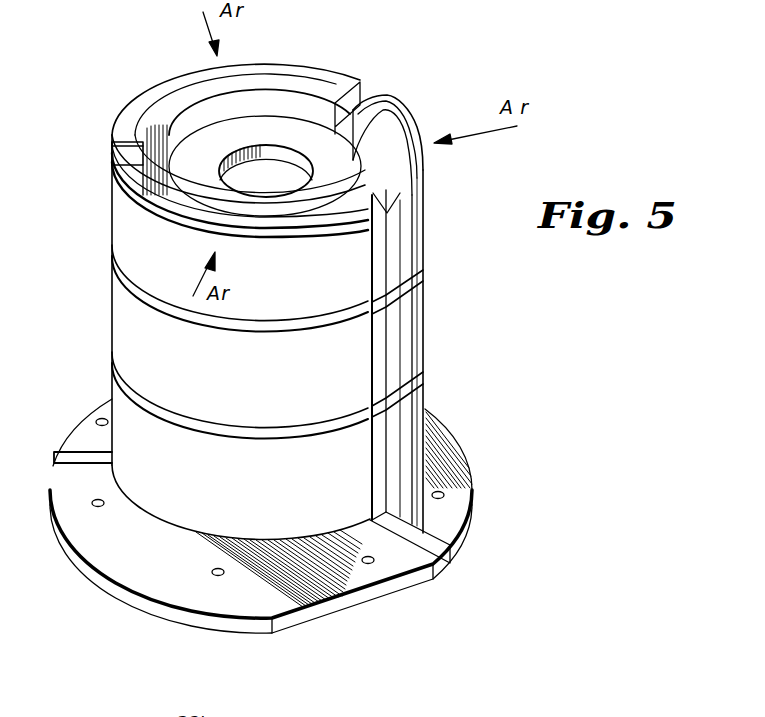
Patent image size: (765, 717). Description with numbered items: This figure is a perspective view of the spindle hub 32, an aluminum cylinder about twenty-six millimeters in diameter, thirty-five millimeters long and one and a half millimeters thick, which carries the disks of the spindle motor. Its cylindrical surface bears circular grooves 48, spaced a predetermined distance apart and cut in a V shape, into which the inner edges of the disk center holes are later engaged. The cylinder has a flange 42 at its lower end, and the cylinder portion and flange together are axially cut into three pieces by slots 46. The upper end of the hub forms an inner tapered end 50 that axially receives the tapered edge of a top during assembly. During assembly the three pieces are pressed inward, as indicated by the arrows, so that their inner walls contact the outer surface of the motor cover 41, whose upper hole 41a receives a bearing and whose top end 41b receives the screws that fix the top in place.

The inner tapered end 50 is at (153, 115).
The slot 46 is at (118, 153).
The spindle hub 32 is at (263, 100).
The upper hole 41a is at (290, 157).
The top end 41b is at (343, 178).
The motor cover 41 is at (398, 192).
The circular groove 48 is at (410, 388).
The flange 42 is at (473, 490).